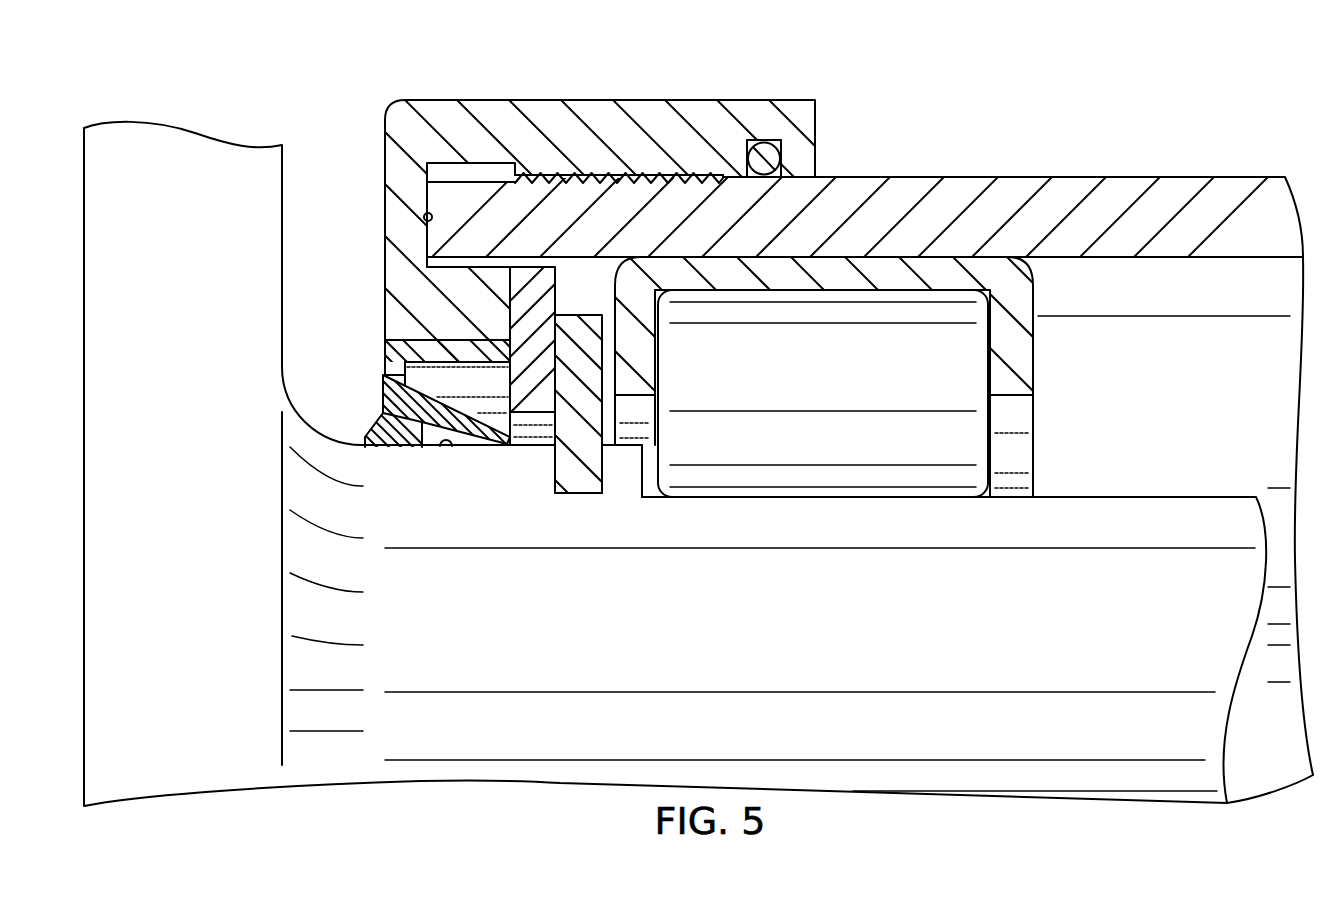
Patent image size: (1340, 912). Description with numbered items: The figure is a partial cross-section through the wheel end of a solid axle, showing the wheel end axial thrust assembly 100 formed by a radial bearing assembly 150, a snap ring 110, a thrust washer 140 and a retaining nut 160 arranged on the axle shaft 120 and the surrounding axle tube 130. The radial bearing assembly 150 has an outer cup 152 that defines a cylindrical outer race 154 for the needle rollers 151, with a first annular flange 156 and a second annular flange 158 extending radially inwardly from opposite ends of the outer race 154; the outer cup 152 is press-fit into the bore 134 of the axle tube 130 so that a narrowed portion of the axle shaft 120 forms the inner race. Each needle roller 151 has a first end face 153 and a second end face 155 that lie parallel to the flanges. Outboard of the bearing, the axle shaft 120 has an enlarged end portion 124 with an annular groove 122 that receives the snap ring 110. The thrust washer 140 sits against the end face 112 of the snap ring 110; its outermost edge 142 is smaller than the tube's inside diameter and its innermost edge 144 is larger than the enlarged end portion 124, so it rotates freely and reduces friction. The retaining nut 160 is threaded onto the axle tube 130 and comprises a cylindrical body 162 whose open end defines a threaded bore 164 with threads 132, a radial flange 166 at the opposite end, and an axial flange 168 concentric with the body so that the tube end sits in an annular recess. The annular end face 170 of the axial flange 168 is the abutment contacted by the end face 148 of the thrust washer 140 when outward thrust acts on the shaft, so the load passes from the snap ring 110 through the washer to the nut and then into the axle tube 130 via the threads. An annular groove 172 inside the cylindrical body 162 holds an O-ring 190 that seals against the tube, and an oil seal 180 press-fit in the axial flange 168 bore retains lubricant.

The wheel end axial thrust assembly 100 is at (606, 588).
The snap ring 110 is at (568, 486).
The end face 112 is at (656, 335).
The axle shaft 120 is at (808, 631).
The annular groove 122 is at (580, 467).
The enlarged end portion 124 is at (443, 447).
The axle tube 130 is at (1030, 176).
The threads 132 is at (649, 172).
The bore 134 is at (1200, 258).
The thrust washer 140 is at (558, 296).
The outermost edge 142 is at (536, 264).
The innermost edge 144 is at (538, 413).
The end face 148 is at (508, 305).
The radial bearing assembly 150 is at (805, 447).
The needle rollers 151 is at (807, 399).
The outer cup 152 is at (852, 254).
The first end face 153 is at (1000, 418).
The outer race 154 is at (919, 294).
The second end face 155 is at (660, 460).
The first annular flange 156 is at (1035, 355).
The second annular flange 158 is at (661, 355).
The retaining nut 160 is at (440, 80).
The cylindrical body 162 is at (620, 100).
The threaded bore 164 is at (681, 172).
The radial flange 166 is at (426, 216).
The axial flange 168 is at (467, 266).
The annular end face 170 is at (512, 327).
The annular groove 172 is at (762, 150).
The oil seal 180 is at (380, 392).
The O-ring 190 is at (772, 159).